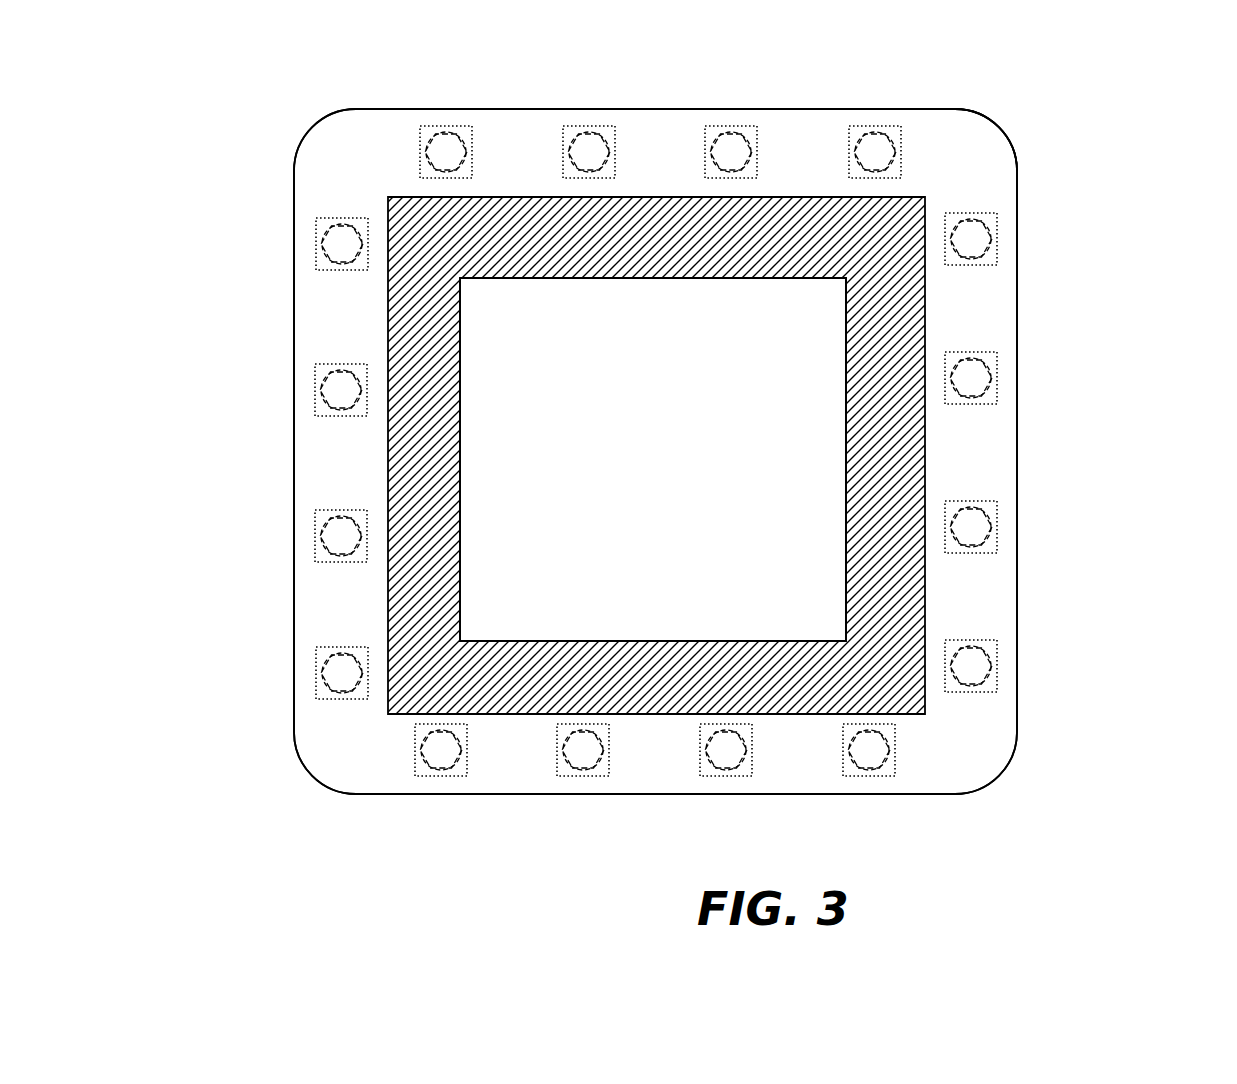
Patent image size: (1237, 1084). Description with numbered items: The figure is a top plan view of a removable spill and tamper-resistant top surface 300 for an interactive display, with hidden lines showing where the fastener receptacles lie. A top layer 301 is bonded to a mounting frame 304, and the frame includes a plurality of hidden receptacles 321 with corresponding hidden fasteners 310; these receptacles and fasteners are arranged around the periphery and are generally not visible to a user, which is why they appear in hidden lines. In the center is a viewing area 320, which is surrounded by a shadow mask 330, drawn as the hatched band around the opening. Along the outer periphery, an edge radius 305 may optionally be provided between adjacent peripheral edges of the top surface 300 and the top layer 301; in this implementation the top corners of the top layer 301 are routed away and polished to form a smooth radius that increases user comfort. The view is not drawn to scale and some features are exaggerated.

The removable spill and tamper-resistant top surface 300 is at (694, 509).
The top layer 301 is at (1017, 602).
The mounting frame 304 is at (315, 333).
The edge radius 305 is at (1007, 137).
The hidden fasteners 310 is at (330, 548).
The viewing area 320 is at (837, 360).
The hidden receptacles 321 is at (417, 143).
The shadow mask 330 is at (888, 490).